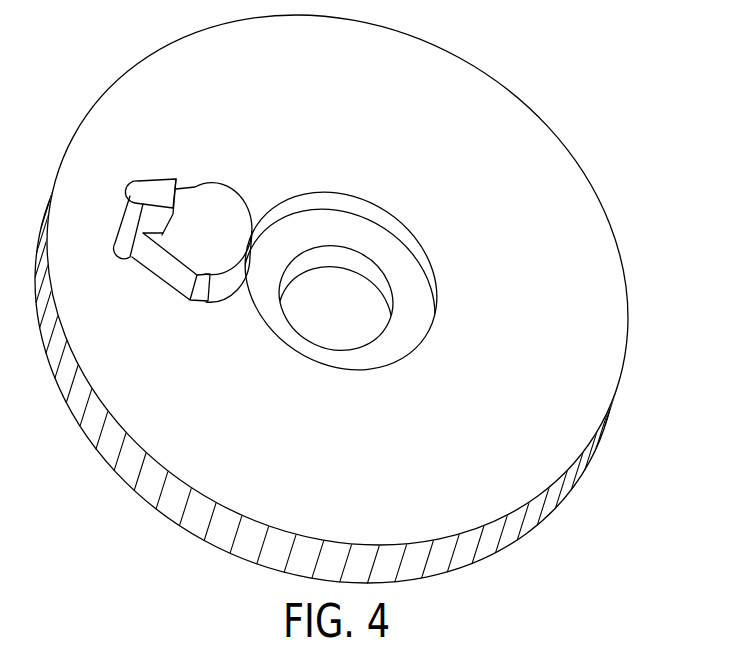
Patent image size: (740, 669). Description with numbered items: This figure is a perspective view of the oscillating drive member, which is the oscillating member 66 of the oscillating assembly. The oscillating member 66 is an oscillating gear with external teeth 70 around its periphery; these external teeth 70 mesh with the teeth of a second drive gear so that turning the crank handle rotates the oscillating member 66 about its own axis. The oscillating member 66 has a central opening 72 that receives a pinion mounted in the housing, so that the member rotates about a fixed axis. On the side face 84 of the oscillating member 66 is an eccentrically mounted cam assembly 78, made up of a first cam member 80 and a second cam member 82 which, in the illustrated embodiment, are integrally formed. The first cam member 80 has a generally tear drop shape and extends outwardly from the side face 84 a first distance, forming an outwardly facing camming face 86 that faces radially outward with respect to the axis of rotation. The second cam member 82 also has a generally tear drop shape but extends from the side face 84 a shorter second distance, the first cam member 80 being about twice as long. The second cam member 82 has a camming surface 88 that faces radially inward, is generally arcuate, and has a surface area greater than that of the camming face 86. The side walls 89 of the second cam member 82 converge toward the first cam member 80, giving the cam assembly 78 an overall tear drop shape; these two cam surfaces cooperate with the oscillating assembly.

The oscillating member 66 is at (361, 334).
The external teeth 70 is at (490, 545).
The central opening 72 is at (350, 333).
The cam assembly 78 is at (167, 216).
The first cam member 80 is at (144, 224).
The second cam member 82 is at (216, 248).
The side face 84 is at (530, 122).
The camming face 86 is at (127, 207).
The camming surface 88 is at (217, 288).
The side walls 89 is at (192, 192).